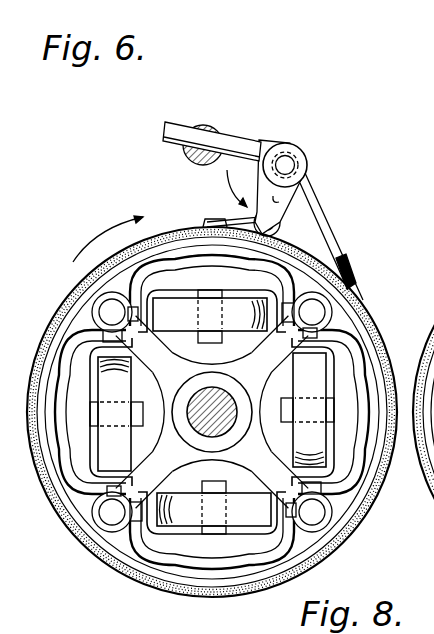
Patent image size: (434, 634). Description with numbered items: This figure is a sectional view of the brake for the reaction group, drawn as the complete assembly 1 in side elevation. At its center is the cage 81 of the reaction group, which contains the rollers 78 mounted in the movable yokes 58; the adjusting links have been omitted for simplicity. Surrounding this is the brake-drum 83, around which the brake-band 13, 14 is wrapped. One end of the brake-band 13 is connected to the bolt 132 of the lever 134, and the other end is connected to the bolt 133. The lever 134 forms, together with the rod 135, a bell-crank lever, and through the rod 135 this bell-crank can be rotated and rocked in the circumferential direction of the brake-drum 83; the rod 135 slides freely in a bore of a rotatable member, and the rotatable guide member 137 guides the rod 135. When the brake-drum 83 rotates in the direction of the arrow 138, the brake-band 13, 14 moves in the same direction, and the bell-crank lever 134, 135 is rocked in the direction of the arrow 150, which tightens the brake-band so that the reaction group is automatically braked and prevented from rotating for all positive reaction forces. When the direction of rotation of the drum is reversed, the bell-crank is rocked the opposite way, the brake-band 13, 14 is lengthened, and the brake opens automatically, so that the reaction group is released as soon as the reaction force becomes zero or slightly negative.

The brake assembly spider 1 is at (200, 418).
The brake-band 13 is at (343, 267).
The brake-band 14 is at (353, 287).
The movable yokes 58 is at (167, 518).
The rollers 78 is at (157, 528).
The cage 81 is at (260, 362).
The brake-drum 83 is at (177, 546).
The bolt 132 is at (285, 163).
The bolt 133 is at (277, 220).
The lever 134 is at (307, 183).
The rod 135 is at (240, 146).
The rotatable guide member 137 is at (225, 120).
The arrow 138 is at (100, 232).
The arrow 150 is at (222, 177).